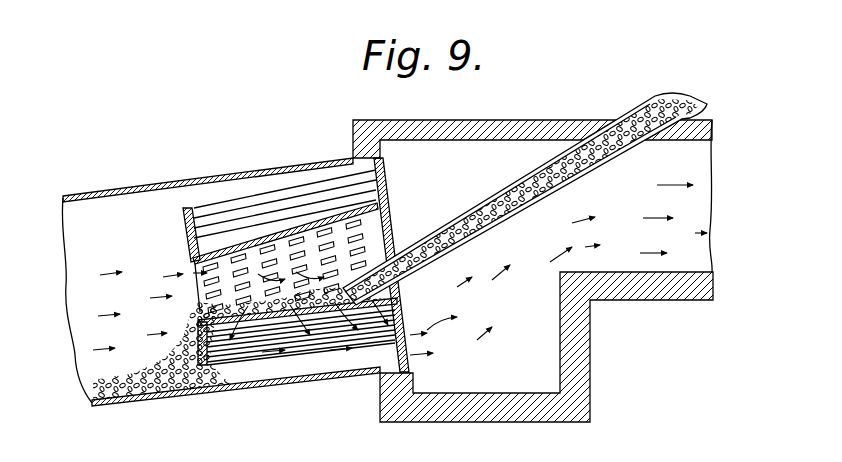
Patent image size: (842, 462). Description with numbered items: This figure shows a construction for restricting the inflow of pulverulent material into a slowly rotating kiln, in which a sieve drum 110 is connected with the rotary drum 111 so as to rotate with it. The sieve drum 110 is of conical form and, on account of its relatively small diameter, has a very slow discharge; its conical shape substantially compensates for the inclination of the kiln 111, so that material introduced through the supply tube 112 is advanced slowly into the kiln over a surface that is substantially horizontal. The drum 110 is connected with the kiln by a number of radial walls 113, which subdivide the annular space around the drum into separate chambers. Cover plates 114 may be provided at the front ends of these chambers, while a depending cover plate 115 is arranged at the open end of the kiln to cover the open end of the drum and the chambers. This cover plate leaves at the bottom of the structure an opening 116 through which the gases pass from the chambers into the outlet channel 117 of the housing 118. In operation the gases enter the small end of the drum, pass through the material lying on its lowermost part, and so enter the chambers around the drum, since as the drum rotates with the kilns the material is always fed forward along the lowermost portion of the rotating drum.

The sieve drum 110 is at (278, 222).
The rotary drum 111 is at (167, 185).
The supply tube 112 is at (523, 177).
The radial walls 113 is at (228, 216).
The cover plates 114 is at (183, 226).
The depending cover plate 115 is at (388, 191).
The opening 116 is at (413, 337).
The outlet channel 117 is at (582, 262).
The housing 118 is at (582, 345).